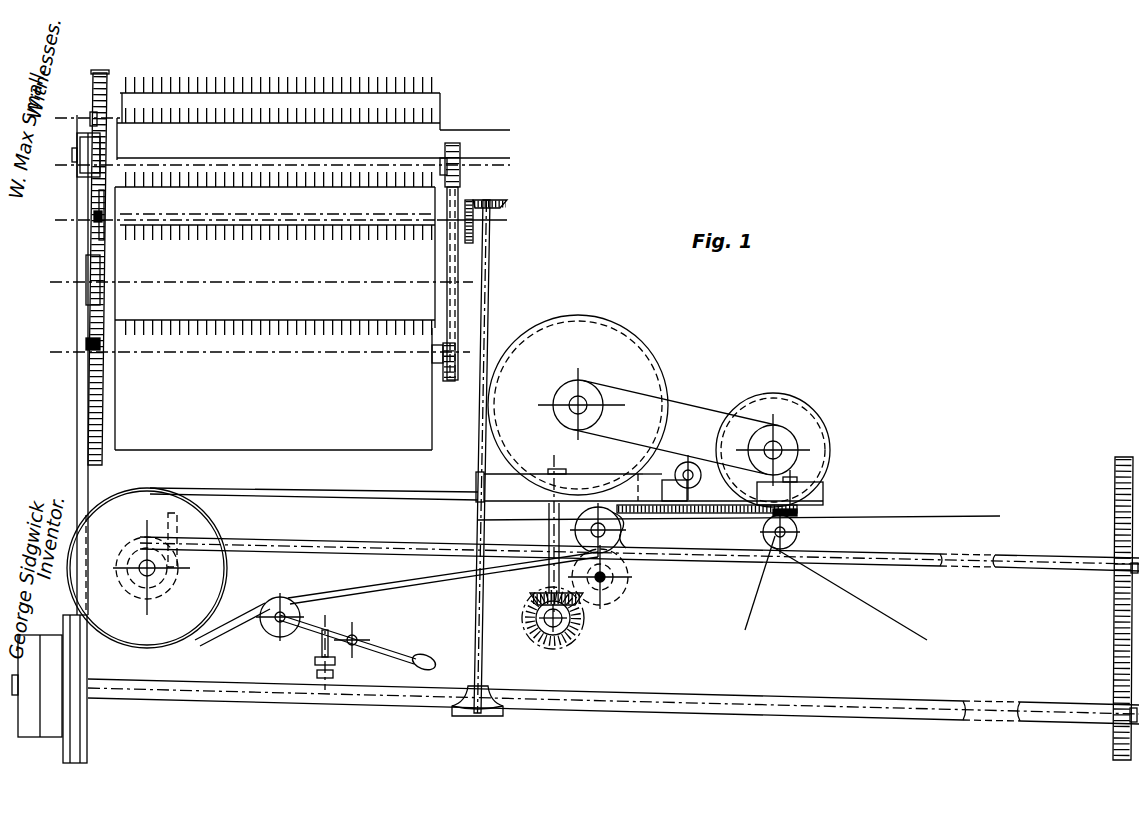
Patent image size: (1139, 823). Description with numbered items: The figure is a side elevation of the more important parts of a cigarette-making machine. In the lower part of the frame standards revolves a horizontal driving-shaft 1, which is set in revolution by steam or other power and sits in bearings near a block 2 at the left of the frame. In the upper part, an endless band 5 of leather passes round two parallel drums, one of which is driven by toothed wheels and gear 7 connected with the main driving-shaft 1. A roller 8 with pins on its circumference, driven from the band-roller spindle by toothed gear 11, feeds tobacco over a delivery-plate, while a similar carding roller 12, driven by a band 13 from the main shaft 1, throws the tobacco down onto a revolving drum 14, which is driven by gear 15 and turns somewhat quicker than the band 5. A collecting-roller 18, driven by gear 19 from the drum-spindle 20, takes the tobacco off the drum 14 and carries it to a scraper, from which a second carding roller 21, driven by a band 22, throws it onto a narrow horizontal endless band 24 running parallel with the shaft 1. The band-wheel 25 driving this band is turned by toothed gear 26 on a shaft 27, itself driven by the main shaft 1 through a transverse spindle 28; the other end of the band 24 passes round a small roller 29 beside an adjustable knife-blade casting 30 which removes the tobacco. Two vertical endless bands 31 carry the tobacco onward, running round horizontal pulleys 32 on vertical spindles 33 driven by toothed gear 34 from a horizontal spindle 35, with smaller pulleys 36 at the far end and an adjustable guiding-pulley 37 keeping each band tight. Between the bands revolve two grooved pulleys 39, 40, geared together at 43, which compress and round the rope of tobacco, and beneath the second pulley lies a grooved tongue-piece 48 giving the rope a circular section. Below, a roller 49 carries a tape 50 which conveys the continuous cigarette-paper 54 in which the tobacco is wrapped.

The horizontal driving-shaft 1 is at (242, 698).
The bearing block 2 is at (48, 636).
The endless band 5 is at (95, 215).
The toothed wheels and gear 7 is at (490, 216).
The roller 8 is at (335, 92).
The toothed gear 11 is at (92, 94).
The carding roller 12 is at (258, 122).
The band 13 is at (76, 430).
The revolving drum 14 is at (300, 449).
The gear 15 is at (442, 368).
The collecting-roller 18 is at (258, 172).
The gear 19 is at (92, 280).
The drum-spindle 20 is at (90, 348).
The second carding roller 21 is at (296, 322).
The band 22 is at (458, 160).
The narrow horizontal endless band 24 is at (358, 494).
The band-wheel 25 is at (208, 505).
The toothed gear 26 is at (168, 528).
The shaft 27 is at (388, 542).
The transverse spindle 28 is at (160, 572).
The small roller 29 is at (622, 532).
The knife-blade casting 30 is at (672, 512).
The vertical endless bands 31 is at (648, 492).
The horizontal pulleys 32 is at (540, 474).
The vertical spindles 33 is at (548, 525).
The toothed gear 34 is at (534, 600).
The horizontal spindle 35 is at (604, 579).
The smaller pulleys 36 is at (802, 485).
The adjustable guiding-pulley 37 is at (675, 476).
The grooved pulley 39 is at (656, 358).
The grooved pulley 40 is at (826, 426).
The gearing 43 is at (690, 408).
The grooved tongue-piece 48 is at (806, 514).
The roller 49 is at (800, 532).
The tape 50 is at (855, 604).
The continuous cigarette-paper 54 is at (756, 600).